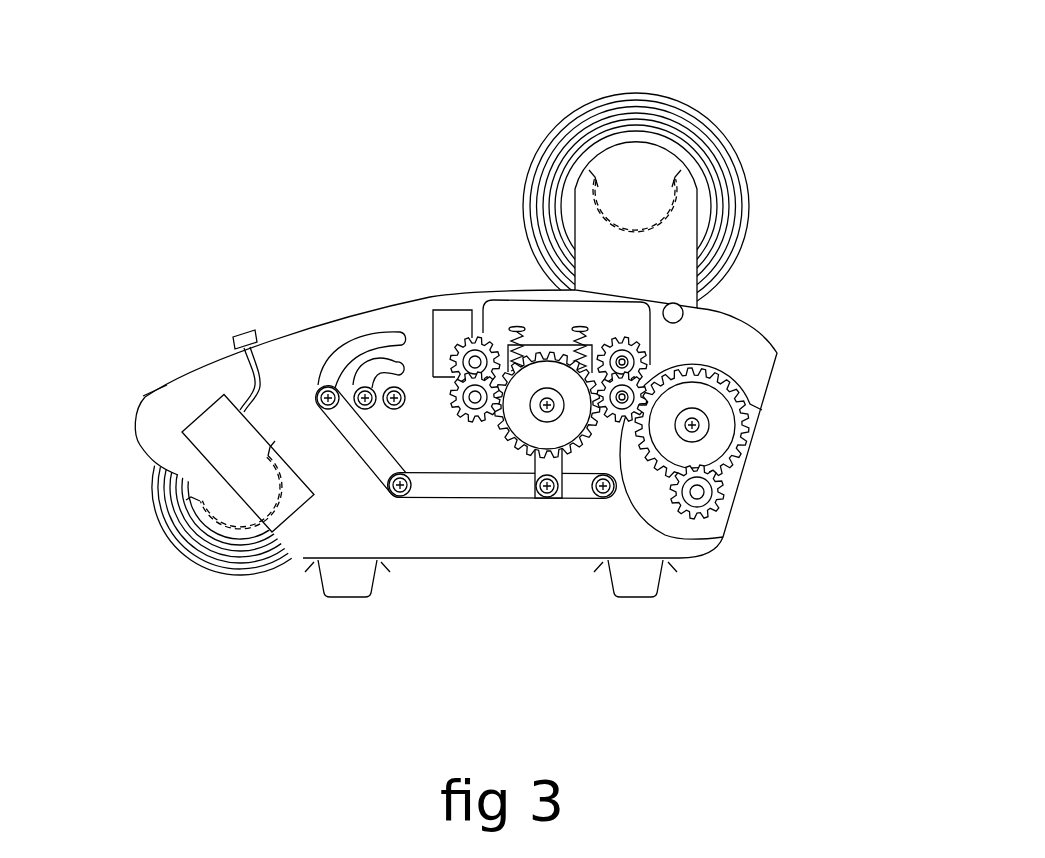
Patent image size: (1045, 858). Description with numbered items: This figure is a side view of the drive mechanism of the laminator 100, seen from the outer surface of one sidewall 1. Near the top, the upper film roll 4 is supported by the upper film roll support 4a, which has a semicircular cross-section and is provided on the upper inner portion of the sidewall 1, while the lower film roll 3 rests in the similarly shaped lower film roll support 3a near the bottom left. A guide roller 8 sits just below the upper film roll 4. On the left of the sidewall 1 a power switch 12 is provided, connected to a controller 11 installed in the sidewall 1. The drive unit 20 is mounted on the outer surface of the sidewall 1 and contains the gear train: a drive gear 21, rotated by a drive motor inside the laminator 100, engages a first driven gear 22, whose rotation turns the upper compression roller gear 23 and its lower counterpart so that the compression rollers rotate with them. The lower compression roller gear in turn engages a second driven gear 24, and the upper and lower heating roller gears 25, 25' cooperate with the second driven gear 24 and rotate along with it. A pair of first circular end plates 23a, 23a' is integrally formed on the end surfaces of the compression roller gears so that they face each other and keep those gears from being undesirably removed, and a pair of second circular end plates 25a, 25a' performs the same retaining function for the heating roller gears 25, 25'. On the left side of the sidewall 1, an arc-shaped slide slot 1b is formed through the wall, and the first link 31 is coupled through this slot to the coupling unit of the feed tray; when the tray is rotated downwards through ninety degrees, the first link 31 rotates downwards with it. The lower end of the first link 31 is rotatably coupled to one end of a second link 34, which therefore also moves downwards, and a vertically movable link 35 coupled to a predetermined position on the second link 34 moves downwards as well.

The sidewall 1 is at (487, 545).
The slide slot 1b is at (343, 362).
The lower film roll 3 is at (173, 533).
The lower film roll support 3a is at (250, 525).
The upper film roll 4 is at (643, 117).
The upper film roll support 4a is at (668, 205).
The guide roller 8 is at (683, 312).
The controller 11 is at (208, 441).
The switch 12 is at (244, 332).
The drive unit 20 is at (694, 351).
The drive gear 21 is at (704, 492).
The first driven gear 22 is at (722, 425).
The upper compression roller gear 23 is at (622, 358).
The first circular end plate 23a is at (771, 375).
The first circular end plate 23a' is at (638, 389).
The second driven gear 24 is at (520, 385).
The upper heating roller gear 25 is at (499, 500).
The lower heating roller gear 25' is at (442, 308).
The second circular end plate 25a is at (348, 287).
The second circular end plate 25a' is at (438, 379).
The first link 31 is at (363, 450).
The second link 34 is at (453, 490).
The vertically movable link 35 is at (548, 494).
The laminator 100 is at (430, 193).